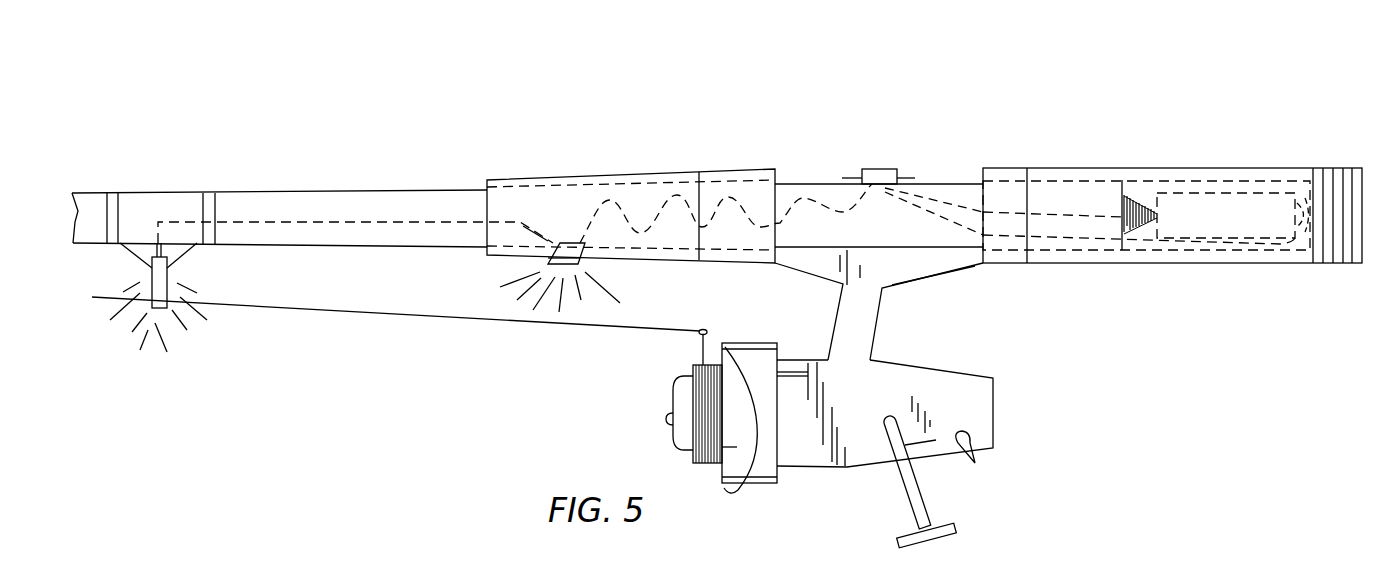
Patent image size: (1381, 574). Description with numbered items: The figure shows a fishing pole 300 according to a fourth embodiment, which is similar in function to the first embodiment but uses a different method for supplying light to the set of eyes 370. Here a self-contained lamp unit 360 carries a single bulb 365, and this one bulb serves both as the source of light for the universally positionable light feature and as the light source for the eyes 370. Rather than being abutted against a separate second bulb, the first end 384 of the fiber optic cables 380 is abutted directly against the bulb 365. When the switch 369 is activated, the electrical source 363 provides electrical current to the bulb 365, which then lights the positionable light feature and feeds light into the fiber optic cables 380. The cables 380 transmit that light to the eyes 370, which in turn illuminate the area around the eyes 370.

The fishing pole 300 is at (1212, 52).
The self-contained lamp unit 360 is at (1172, 258).
The electrical source 363 is at (1215, 164).
The bulb 365 is at (565, 242).
The switch 369 is at (887, 169).
The eyes 370 is at (140, 268).
The fiber optic cables 380 is at (263, 222).
The first end 384 is at (557, 243).